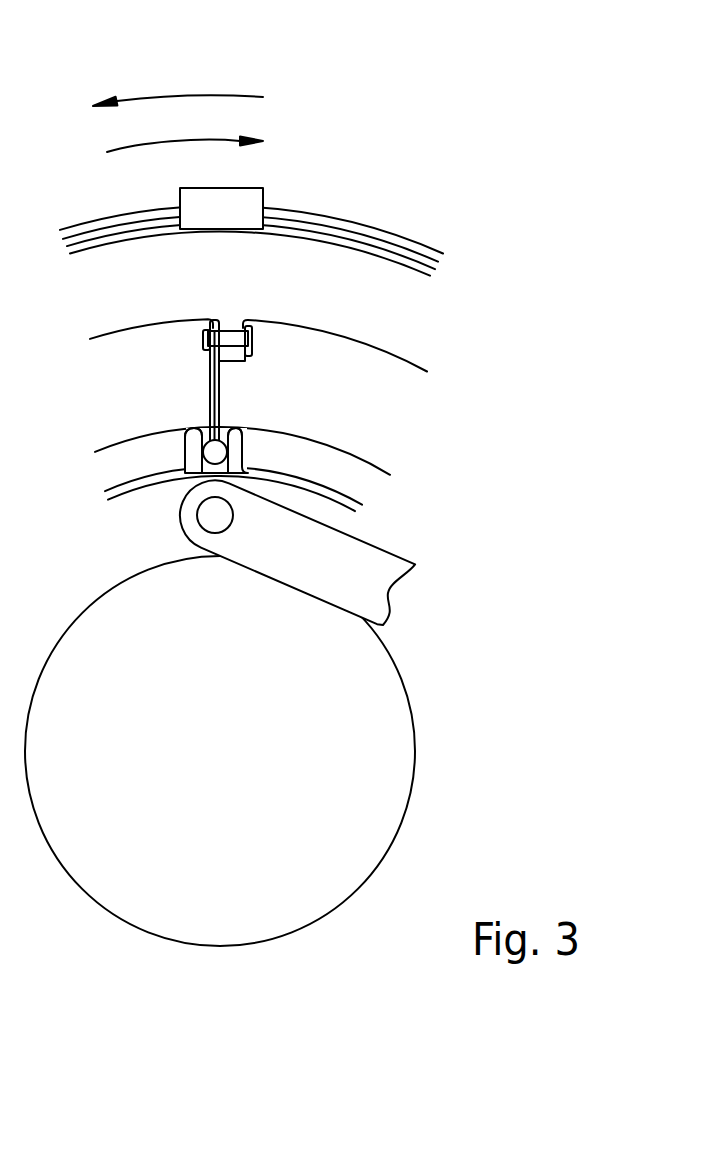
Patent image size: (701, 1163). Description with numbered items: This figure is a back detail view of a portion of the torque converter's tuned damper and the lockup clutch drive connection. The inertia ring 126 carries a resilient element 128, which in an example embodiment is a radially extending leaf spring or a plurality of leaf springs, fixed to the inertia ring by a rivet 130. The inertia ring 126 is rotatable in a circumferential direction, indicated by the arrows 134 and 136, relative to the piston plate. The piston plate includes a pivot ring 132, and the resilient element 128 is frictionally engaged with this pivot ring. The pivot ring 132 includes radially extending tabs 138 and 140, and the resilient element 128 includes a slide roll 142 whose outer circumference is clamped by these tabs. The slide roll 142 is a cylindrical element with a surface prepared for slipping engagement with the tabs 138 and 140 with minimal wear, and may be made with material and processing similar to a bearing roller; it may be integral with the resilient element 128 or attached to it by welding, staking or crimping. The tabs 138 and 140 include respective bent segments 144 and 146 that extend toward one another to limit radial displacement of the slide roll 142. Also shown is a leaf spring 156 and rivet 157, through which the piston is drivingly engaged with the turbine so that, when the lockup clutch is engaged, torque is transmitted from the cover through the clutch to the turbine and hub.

The inertia ring 126 is at (293, 263).
The resilient element 128 is at (220, 395).
The rivet 130 is at (252, 334).
The pivot ring 132 is at (349, 500).
The arrow 134 is at (181, 140).
The arrow 136 is at (147, 98).
The radially extending tab 138 is at (202, 452).
The radially extending tab 140 is at (238, 452).
The slide roll 142 is at (211, 452).
The bent segment 144 is at (193, 433).
The bent segment 146 is at (240, 430).
The leaf spring 156 is at (373, 568).
The rivet 157 is at (208, 518).